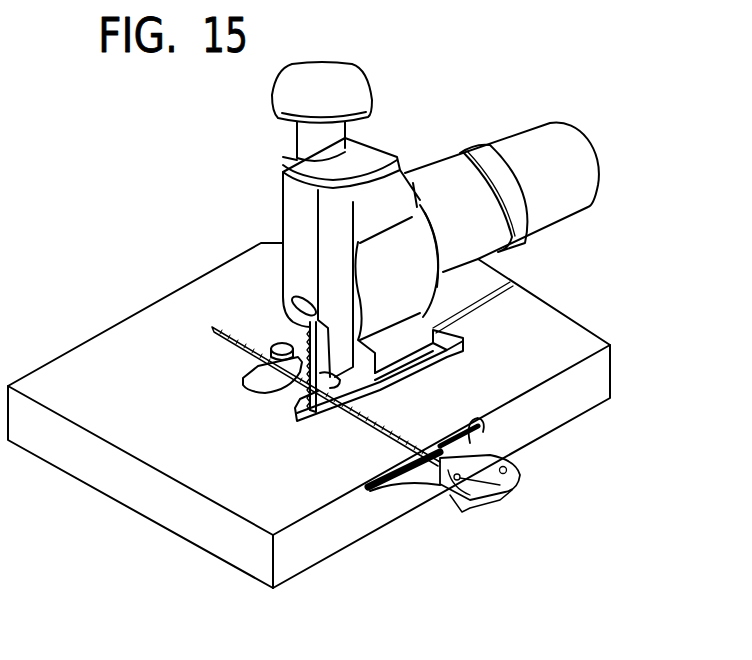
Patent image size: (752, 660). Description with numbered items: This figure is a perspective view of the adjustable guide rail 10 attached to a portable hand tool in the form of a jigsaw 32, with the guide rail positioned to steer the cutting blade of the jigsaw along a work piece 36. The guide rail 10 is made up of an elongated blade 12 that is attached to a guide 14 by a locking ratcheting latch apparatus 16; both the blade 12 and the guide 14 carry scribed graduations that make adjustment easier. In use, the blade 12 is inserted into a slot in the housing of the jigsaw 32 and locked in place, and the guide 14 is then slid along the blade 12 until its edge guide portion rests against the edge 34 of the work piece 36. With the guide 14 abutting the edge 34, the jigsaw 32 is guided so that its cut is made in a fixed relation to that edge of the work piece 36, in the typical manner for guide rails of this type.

The adjustable guide rail 10 is at (411, 438).
The elongated blade 12 is at (398, 422).
The guide 14 is at (477, 418).
The locking ratcheting latch apparatus 16 is at (505, 437).
The jigsaw 32 is at (558, 158).
The edge 34 is at (597, 378).
The work piece 36 is at (128, 338).